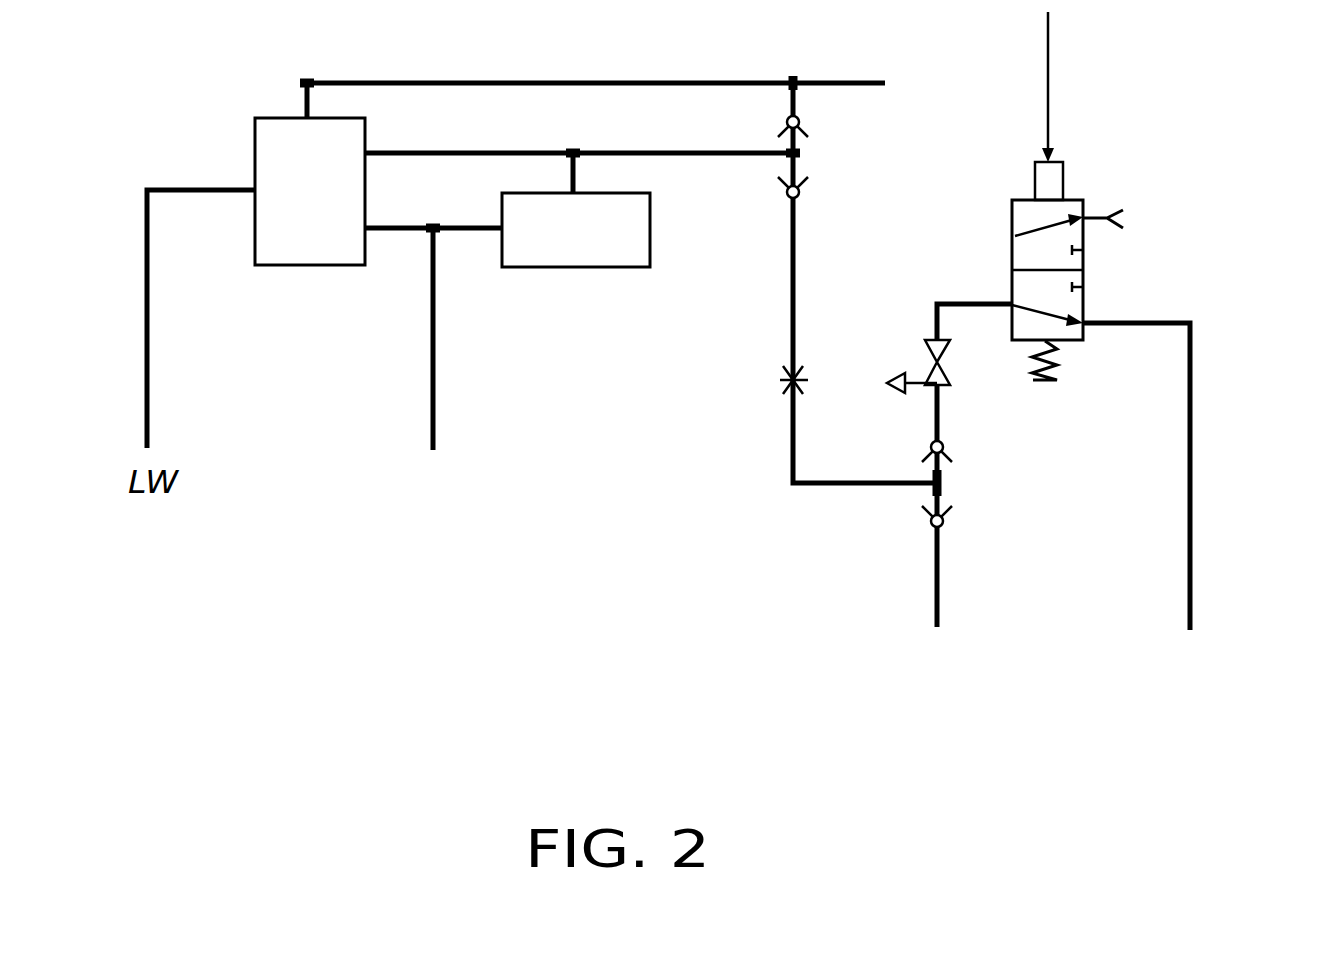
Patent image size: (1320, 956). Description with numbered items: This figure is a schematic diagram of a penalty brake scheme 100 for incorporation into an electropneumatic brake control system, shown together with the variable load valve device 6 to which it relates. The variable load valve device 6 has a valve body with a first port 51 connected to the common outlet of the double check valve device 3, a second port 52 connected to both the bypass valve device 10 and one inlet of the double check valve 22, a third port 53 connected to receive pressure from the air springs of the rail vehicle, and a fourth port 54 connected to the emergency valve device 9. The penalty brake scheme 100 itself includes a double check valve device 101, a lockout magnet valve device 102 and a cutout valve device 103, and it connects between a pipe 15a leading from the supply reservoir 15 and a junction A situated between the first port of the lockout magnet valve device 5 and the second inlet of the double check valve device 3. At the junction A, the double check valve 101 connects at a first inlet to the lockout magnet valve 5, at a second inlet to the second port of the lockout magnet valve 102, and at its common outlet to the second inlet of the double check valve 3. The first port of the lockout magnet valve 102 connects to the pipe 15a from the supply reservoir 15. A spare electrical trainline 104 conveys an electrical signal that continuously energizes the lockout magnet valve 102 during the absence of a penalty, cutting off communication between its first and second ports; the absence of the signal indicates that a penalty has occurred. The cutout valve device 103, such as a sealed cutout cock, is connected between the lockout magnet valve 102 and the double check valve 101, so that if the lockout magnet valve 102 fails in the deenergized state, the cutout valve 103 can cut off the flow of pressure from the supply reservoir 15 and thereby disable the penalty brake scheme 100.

The variable load valve device 6 is at (255, 150).
The fourth port 54 is at (303, 116).
The third port 53 is at (253, 197).
The first port 51 is at (373, 147).
The second port 52 is at (372, 222).
The double check valve 22 is at (426, 438).
The bypass valve device 10 is at (612, 267).
The double check valve device 3 is at (797, 135).
The junction A is at (781, 380).
The penalty brake scheme 100 is at (775, 500).
The double check valve device 101 is at (942, 492).
The lockout magnet valve device 5 is at (946, 725).
The cutout valve device 103 is at (935, 343).
The lockout magnet valve device 102 is at (1070, 197).
The spare electrical trainline 104 is at (1048, 30).
The emergency valve device 9 is at (975, 101).
The pipe 15a is at (1190, 510).
The supply reservoir 15 is at (1190, 709).